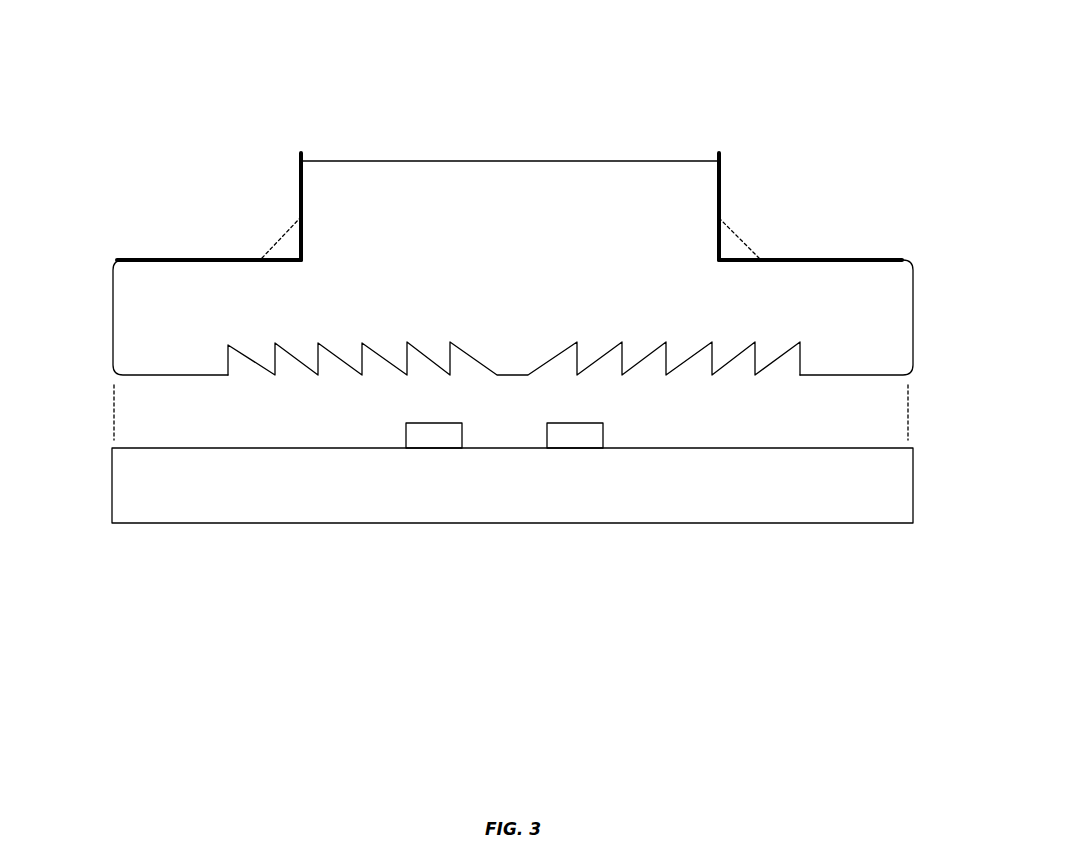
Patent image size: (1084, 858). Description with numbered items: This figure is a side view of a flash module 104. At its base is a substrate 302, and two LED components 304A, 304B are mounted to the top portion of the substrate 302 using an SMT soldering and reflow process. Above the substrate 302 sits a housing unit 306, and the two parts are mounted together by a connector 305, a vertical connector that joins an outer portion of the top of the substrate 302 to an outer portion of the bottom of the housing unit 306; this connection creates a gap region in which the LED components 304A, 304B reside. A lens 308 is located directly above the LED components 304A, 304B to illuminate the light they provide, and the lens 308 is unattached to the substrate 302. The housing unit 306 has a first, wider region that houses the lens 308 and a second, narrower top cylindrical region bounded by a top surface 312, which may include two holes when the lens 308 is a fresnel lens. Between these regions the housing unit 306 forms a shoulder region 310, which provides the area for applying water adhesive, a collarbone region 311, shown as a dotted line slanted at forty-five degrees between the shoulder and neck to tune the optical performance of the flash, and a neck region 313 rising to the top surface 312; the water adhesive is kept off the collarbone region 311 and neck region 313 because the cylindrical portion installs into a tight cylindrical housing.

The flash module 104 is at (298, 101).
The substrate 302 is at (767, 523).
The LED component 304A is at (406, 440).
The LED component 304B is at (603, 438).
The connector 305 is at (113, 425).
The housing unit 306 is at (112, 320).
The lens 308 is at (418, 342).
The shoulder region 310 is at (212, 258).
The collarbone region 311 is at (282, 235).
The top surface 312 is at (577, 160).
The neck region 313 is at (300, 183).